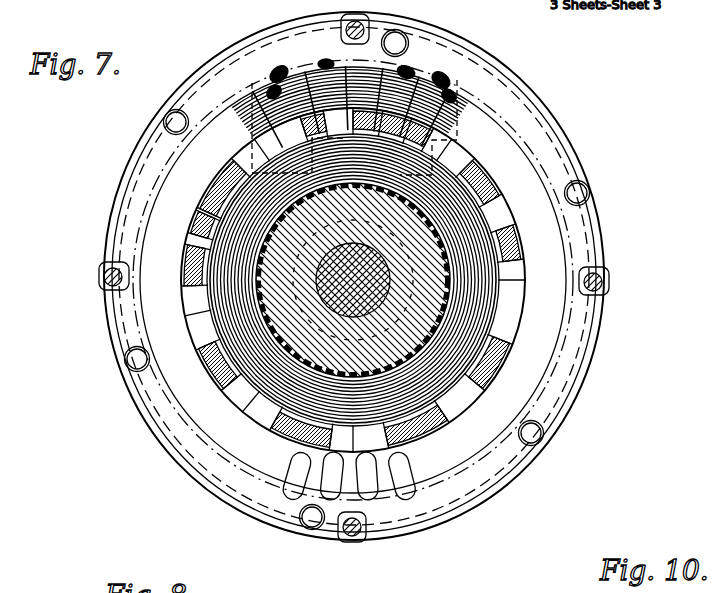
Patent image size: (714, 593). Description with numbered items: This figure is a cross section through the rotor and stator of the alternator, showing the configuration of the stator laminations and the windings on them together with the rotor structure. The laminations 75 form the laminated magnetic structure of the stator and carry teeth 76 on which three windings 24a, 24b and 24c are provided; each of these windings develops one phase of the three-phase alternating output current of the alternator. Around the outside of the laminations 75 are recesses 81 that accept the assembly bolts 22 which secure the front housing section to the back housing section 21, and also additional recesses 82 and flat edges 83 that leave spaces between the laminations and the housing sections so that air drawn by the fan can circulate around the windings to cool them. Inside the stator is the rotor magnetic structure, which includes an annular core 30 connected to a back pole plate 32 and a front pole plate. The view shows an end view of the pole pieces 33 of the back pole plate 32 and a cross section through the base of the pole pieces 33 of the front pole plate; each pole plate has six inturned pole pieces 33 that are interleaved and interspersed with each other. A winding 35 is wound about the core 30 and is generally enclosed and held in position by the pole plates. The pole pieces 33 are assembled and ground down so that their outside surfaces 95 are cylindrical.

In FIG. 7, the back housing section 21 is at (397, 77).
In FIG. 7, the bolts 22 is at (360, 22).
In FIG. 7, the winding 24a is at (440, 68).
In FIG. 7, the winding 24b is at (446, 62).
In FIG. 7, the winding 24c is at (296, 76).
In FIG. 7, the annular core 30 is at (430, 240).
In FIG. 7, the back pole plate 32 is at (497, 277).
In FIG. 7, the pole pieces 33 is at (517, 323).
In FIG. 7, the winding 35 is at (478, 340).
In FIG. 7, the laminations 75 is at (510, 100).
In FIG. 7, the teeth 76 is at (350, 468).
In FIG. 7, the recesses 81 is at (342, 25).
In FIG. 7, the recesses 82 is at (455, 40).
In FIG. 7, the flat edges 83 is at (595, 243).
In FIG. 10, the outside surfaces 95 is at (552, 592).